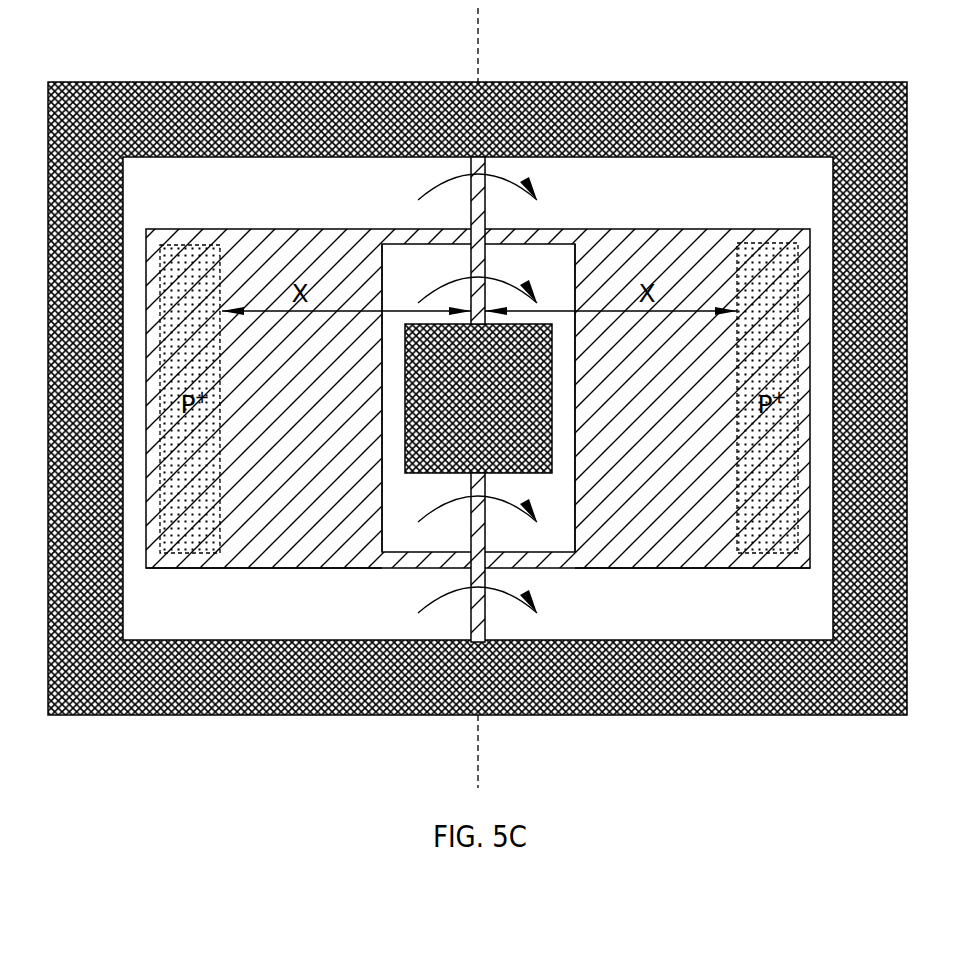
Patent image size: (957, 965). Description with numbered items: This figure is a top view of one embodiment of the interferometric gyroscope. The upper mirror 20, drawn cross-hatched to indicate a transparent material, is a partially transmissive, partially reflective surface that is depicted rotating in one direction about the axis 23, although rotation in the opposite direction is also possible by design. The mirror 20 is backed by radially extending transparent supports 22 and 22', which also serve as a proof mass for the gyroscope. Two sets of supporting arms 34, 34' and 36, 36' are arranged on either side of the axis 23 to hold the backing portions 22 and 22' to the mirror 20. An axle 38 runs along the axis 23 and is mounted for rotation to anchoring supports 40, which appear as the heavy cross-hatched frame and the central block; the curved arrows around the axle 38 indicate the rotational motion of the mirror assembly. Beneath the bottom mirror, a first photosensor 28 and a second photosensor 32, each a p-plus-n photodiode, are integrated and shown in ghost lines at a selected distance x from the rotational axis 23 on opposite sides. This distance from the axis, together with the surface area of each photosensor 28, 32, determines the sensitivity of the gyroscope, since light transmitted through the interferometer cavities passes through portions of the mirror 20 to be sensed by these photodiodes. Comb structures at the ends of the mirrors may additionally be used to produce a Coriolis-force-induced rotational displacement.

The first partially transmissive, partially reflective surface 20 is at (289, 410).
The radially extending transparent support 22 is at (264, 601).
The radially extending transparent support 22' is at (692, 598).
The axis 23 is at (479, 37).
The first photosensor 28 is at (154, 478).
The second photosensor 32 is at (801, 293).
The supporting arm 34 is at (580, 286).
The supporting arm 34' is at (572, 513).
The supporting arm 36 is at (375, 286).
The supporting arm 36' is at (380, 513).
The axle 38 is at (471, 160).
The anchoring support 40 is at (477, 398).